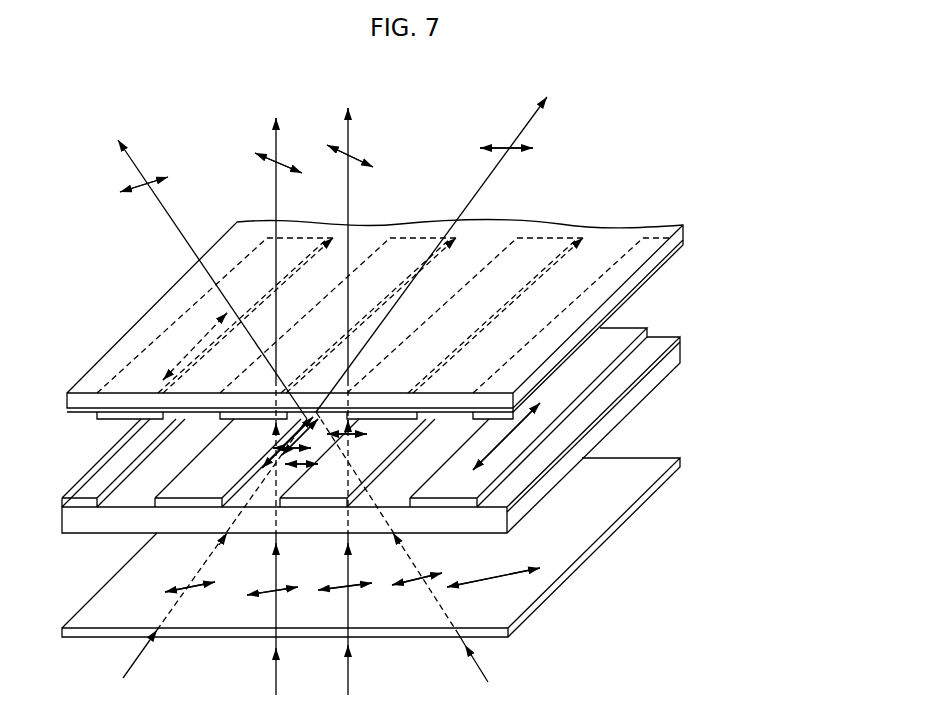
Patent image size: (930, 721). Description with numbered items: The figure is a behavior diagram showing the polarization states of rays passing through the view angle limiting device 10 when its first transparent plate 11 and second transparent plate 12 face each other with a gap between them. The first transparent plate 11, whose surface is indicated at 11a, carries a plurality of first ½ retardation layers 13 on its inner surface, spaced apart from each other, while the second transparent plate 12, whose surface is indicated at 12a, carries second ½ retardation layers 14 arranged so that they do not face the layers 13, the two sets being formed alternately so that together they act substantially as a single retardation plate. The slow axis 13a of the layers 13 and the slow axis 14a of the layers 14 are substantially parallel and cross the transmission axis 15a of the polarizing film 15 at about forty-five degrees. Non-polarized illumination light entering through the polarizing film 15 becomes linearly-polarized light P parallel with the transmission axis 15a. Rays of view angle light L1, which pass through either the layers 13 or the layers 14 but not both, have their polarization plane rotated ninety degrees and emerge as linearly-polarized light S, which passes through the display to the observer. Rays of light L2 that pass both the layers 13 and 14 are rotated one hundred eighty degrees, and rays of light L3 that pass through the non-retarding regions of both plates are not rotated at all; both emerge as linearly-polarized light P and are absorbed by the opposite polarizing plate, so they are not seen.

The view angle limiting device 10 is at (657, 203).
The first transparent plate 11 is at (77, 522).
The upper surface of lower substrate 11a is at (660, 366).
The second transparent plate 12 is at (618, 225).
The lower surface of upper substrate 12a is at (663, 252).
The first ½ retardation layers 13 is at (590, 382).
The slow axis of the first ½ retardation layers 13a is at (578, 442).
The second ½ retardation layers 14 is at (547, 253).
The slow axis of the second ½ retardation layers 14a is at (187, 350).
The polarizing film 15 is at (85, 630).
The transmission axis 15a is at (497, 578).
The rays of view angle light L1 is at (274, 142).
The rays of light L2 is at (130, 157).
The rays of light L3 is at (528, 122).
The linearly-polarized light S is at (287, 160).
The linearly-polarized light P is at (137, 187).